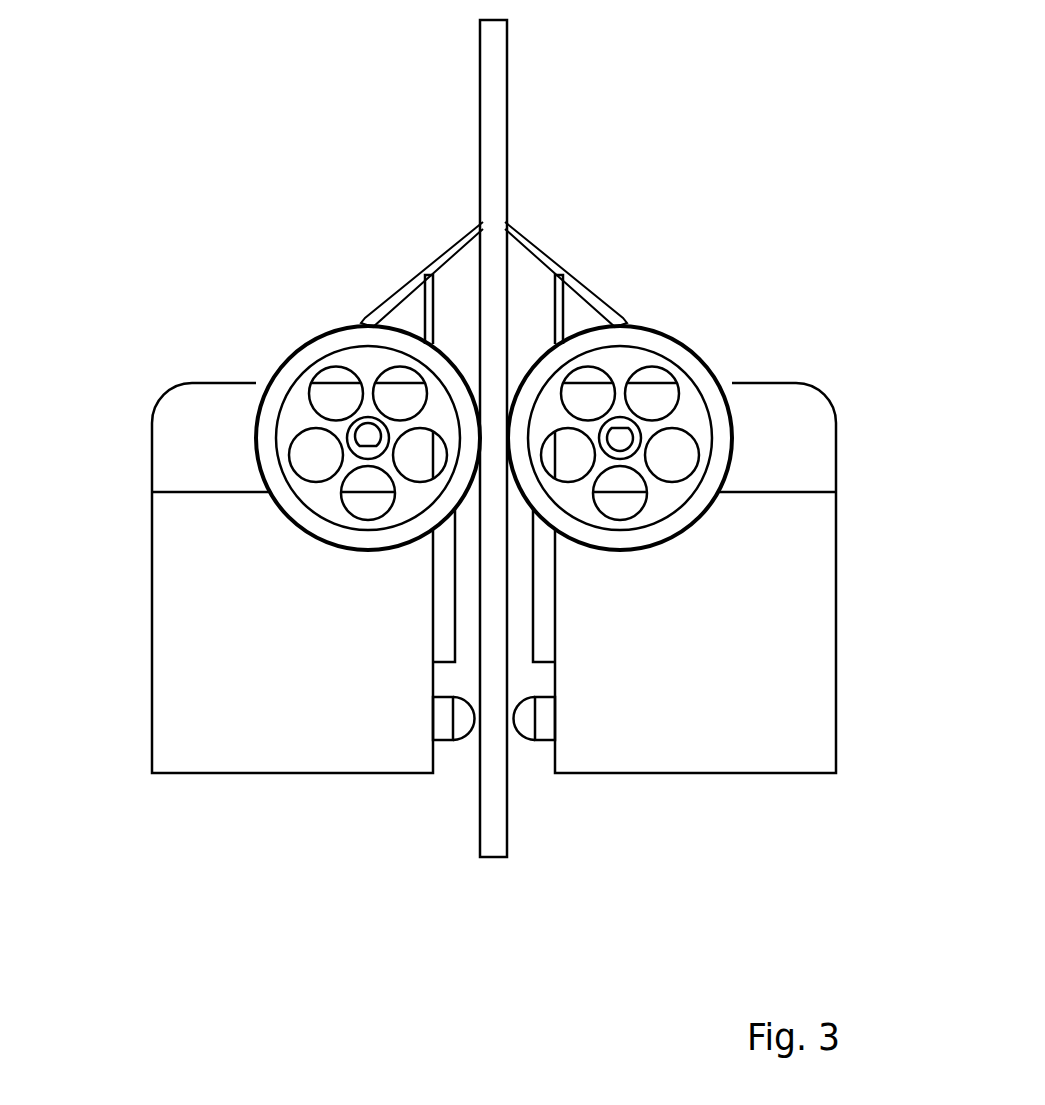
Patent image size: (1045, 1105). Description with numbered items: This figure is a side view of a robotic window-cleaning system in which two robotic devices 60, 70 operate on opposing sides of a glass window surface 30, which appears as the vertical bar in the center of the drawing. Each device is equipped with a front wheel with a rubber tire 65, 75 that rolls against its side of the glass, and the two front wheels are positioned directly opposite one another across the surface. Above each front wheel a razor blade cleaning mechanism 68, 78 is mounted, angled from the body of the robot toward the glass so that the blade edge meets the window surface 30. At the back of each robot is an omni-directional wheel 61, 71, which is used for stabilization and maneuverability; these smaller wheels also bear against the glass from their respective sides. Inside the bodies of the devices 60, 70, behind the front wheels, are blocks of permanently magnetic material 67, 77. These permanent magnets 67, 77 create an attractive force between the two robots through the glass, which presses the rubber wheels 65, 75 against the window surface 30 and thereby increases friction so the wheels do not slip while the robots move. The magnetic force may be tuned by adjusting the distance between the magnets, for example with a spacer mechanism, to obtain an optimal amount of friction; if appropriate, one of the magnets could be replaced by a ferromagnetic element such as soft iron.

The glass window surface 30 is at (492, 843).
The robotic device 60 is at (290, 752).
The omni-directional wheel 61 is at (468, 722).
The front wheel with rubber tire 65 is at (313, 360).
The permanent magnet 67 is at (449, 615).
The razor blade cleaning mechanism 68 is at (402, 287).
The robotic device 70 is at (695, 752).
The omni-directional wheel 71 is at (519, 722).
The front wheel with rubber tire 75 is at (675, 360).
The permanent magnet 77 is at (538, 615).
The razor blade cleaning mechanism 78 is at (586, 287).